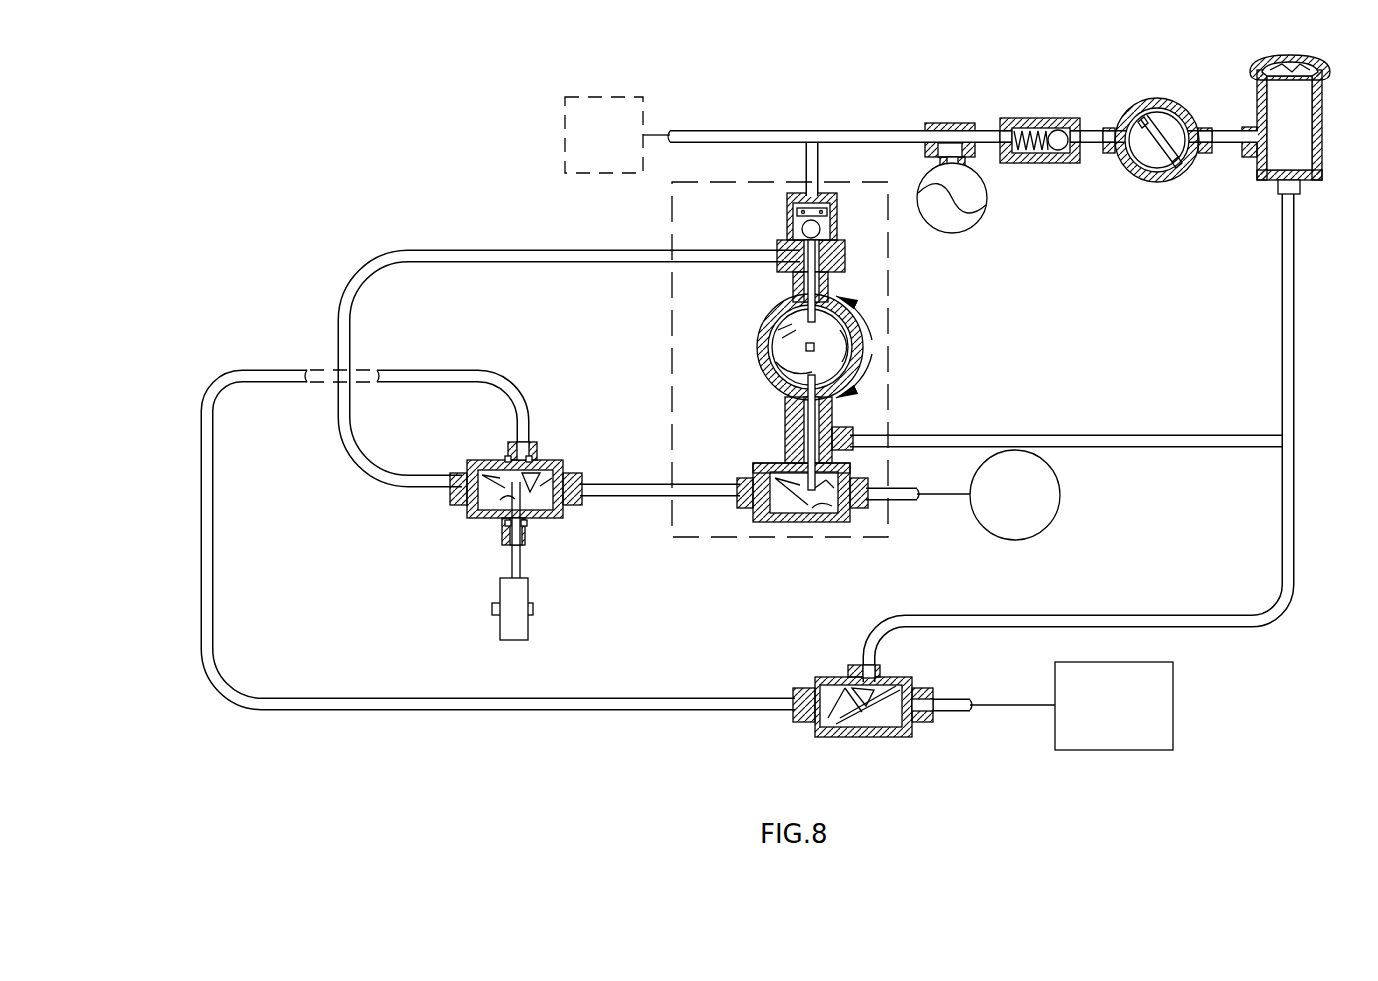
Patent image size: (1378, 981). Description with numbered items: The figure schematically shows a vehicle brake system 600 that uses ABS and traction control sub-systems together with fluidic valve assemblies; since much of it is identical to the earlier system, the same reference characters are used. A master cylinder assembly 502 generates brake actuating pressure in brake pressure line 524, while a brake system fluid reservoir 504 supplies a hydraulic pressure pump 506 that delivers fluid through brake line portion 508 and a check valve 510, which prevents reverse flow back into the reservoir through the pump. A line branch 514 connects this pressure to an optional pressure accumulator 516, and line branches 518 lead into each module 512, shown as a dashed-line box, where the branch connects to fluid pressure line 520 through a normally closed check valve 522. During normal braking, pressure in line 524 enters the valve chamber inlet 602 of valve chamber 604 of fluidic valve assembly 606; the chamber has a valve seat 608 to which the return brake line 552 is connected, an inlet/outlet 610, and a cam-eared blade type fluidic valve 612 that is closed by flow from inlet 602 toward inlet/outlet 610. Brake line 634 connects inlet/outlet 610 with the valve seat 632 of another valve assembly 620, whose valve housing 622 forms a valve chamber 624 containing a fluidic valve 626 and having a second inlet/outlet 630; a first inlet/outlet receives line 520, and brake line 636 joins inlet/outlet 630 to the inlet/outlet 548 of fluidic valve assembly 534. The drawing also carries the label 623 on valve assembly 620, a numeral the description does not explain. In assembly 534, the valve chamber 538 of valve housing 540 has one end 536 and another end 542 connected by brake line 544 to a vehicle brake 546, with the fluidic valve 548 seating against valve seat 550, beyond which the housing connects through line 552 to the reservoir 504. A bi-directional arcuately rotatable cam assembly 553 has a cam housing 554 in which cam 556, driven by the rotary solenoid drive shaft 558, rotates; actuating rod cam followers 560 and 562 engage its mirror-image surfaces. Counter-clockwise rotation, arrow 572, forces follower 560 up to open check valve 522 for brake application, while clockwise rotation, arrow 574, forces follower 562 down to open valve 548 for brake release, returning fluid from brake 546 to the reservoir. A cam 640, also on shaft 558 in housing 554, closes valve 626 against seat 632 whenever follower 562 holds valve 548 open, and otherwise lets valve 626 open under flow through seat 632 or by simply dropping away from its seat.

The master cylinder assembly 502 is at (1174, 700).
The brake system fluid reservoir 504 is at (1256, 180).
The hydraulic pressure pump 506 is at (1143, 184).
The brake line portion 508 is at (1106, 124).
The check valve 510 is at (989, 110).
The module 512 is at (648, 90).
The line branch 514 is at (953, 153).
The pressure accumulator 516 is at (972, 232).
The line branch 518 is at (808, 168).
The fluid pressure line 520 is at (506, 246).
The normally closed check valve 522 is at (786, 212).
The brake pressure line 524 is at (945, 716).
The fluidic valve assembly 534 is at (817, 531).
The chamber end 536 is at (758, 507).
The valve chamber 538 is at (772, 523).
The valve housing 540 is at (840, 523).
The chamber end 542 is at (855, 500).
The brake line 544 is at (889, 498).
The vehicle brake 546 is at (1062, 494).
The fluidic valve 548 is at (760, 495).
The valve seat 550 is at (794, 470).
The brake line 552 is at (1283, 344).
The bi-directional arcuately rotatable cam assembly 553 is at (775, 337).
The cam housing 554 is at (784, 323).
The cam 556 is at (805, 340).
The drive shaft 558 is at (820, 349).
The actuating rod cam follower 560 is at (802, 258).
The actuating rod cam follower 562 is at (788, 405).
The arrow 572 is at (876, 324).
The arrow 574 is at (878, 368).
The system 600 is at (366, 188).
The valve chamber inlet 602 is at (926, 704).
The valve chamber 604 is at (853, 730).
The fluidic valve assembly 606 is at (876, 724).
The valve seat 608 is at (873, 680).
The inlet/outlet 610 is at (806, 722).
The fluidic valve 612 is at (832, 686).
The valve assembly 620 is at (520, 499).
The valve housing 622 is at (513, 523).
The valve chamber 623 is at (492, 471).
The valve chamber 624 is at (494, 500).
The fluidic valve 626 is at (537, 462).
The second inlet/outlet 630 is at (562, 505).
The valve seat 632 is at (505, 456).
The brake line 634 is at (648, 700).
The brake line 636 is at (658, 486).
The cam 640 is at (506, 630).